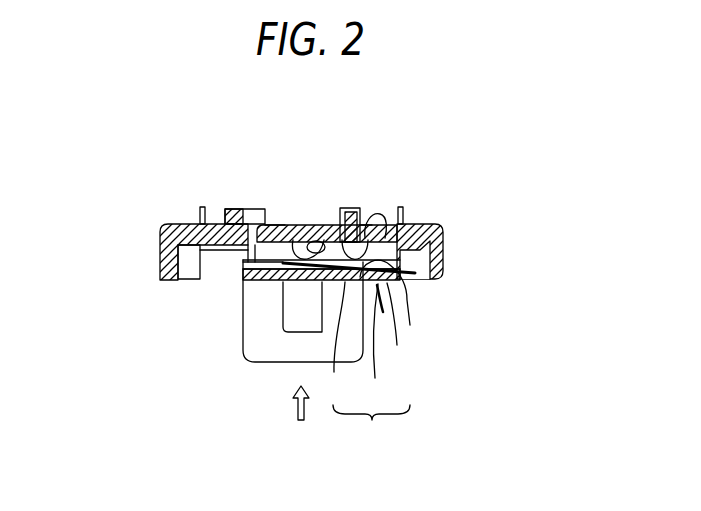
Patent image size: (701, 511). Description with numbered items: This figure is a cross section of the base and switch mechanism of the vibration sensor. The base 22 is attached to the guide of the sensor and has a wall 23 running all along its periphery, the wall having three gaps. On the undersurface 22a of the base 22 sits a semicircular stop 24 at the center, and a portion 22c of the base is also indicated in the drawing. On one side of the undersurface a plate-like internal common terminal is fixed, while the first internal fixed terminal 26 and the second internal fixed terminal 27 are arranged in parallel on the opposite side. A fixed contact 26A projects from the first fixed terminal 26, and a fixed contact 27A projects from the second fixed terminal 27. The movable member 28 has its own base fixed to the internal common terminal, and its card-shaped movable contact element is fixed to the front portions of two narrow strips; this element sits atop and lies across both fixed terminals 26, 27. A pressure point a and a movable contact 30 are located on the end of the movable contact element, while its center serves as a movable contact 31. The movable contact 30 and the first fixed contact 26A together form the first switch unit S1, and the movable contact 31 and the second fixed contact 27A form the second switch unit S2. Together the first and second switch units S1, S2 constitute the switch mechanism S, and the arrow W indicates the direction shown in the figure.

The base 22 is at (445, 228).
The undersurface of base 22a is at (415, 235).
The post / projection of housing 22c is at (247, 232).
The wall 23 is at (433, 270).
The semicircular stop 24 is at (248, 268).
The first internal fixed terminal 26 is at (328, 240).
The fixed contact 26A is at (278, 230).
The second internal fixed terminal 27 is at (374, 222).
The fixed contact 27A is at (344, 228).
The movable member 28 is at (394, 300).
The movable contact 30 is at (312, 262).
The movable contact 31 is at (386, 288).
The pressure point a is at (298, 327).
The first switch unit S1 is at (349, 348).
The second switch unit S2 is at (391, 349).
The switch mechanism S is at (371, 428).
The direction W is at (302, 415).